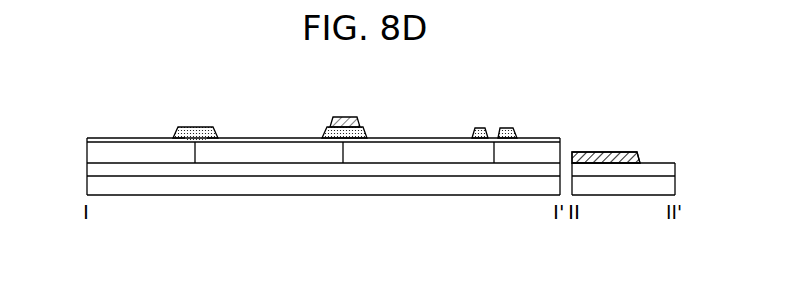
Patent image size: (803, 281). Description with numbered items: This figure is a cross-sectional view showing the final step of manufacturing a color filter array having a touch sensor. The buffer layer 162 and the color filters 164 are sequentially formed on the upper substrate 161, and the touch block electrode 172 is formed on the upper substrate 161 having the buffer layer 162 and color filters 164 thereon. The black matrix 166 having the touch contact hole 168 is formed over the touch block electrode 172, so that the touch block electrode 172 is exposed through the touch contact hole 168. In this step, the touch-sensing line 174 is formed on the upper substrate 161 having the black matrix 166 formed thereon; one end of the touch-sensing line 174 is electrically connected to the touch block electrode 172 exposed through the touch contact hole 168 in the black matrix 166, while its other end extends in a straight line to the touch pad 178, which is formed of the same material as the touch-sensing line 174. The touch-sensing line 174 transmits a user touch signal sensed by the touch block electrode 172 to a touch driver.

The upper substrate 161 is at (95, 183).
The buffer layer 162 is at (95, 167).
The color filters 164 is at (97, 150).
The black matrix 166 is at (203, 127).
The touch contact hole 168 is at (494, 127).
The touch block electrode 172 is at (88, 139).
The touch-sensing line 174 is at (353, 117).
The touch pad 178 is at (627, 152).